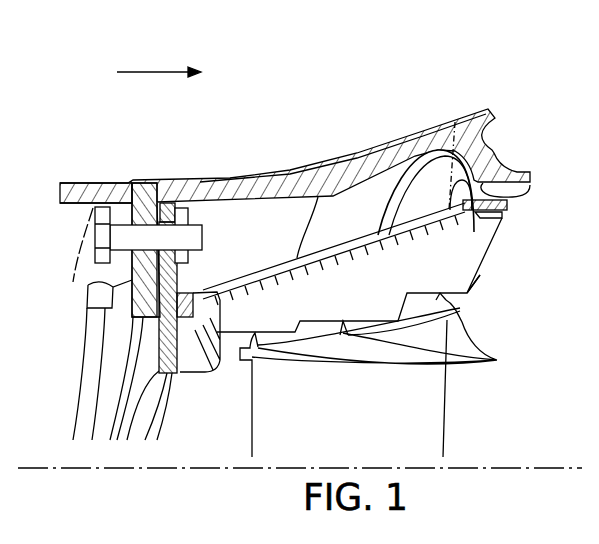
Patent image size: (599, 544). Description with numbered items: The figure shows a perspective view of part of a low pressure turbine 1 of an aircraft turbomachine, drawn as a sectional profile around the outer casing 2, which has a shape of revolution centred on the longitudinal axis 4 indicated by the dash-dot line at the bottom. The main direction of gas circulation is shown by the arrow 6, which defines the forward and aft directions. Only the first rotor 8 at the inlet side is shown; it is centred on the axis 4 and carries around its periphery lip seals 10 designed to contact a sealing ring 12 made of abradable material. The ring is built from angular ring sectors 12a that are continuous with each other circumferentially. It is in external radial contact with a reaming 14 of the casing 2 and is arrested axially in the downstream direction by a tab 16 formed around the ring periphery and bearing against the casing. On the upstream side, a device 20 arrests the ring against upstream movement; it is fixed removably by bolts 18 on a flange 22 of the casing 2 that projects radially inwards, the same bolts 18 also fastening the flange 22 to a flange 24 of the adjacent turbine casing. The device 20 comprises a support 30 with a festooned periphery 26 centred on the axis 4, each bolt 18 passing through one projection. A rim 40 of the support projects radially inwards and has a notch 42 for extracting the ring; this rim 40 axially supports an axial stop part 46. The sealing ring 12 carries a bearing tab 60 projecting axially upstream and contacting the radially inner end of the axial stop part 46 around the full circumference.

The turbine 1 is at (297, 148).
The outer casing 2 is at (234, 189).
The longitudinal axis 4 is at (33, 470).
The arrow 6 is at (153, 71).
The rotor 8 is at (426, 416).
The lip seals 10 is at (497, 360).
The sealing ring 12 is at (551, 240).
The angular ring sectors 12a is at (458, 248).
The reaming 14 is at (504, 200).
The tab 16 is at (483, 195).
The bolts 18 is at (94, 234).
The device 20 is at (130, 360).
The flange 22 is at (82, 270).
The flange 24 is at (78, 193).
The festooned periphery 26 is at (57, 174).
The support 30 is at (183, 263).
The rim 40 is at (215, 297).
The notch 42 is at (127, 316).
The axial stop part 46 is at (132, 385).
The bearing tab 60 is at (197, 377).